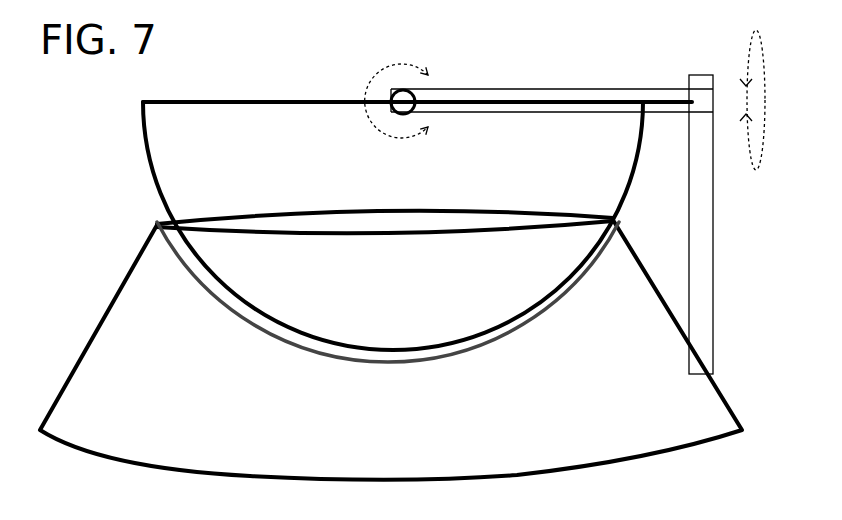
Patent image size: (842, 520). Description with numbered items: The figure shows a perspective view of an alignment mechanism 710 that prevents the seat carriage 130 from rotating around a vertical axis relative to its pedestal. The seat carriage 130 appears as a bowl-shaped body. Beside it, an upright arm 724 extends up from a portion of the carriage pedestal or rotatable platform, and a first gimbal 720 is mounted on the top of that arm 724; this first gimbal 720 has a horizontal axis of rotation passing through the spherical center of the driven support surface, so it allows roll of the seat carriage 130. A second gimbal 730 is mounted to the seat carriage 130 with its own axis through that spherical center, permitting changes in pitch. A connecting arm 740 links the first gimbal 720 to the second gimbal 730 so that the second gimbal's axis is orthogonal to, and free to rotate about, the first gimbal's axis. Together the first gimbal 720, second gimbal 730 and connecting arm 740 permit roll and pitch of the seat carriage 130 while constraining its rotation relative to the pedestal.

The seat carriage 130 is at (143, 101).
The alignment mechanism 710 is at (667, 60).
The first gimbal 720 is at (703, 114).
The arm 724 is at (713, 273).
The second gimbal 730 is at (399, 115).
The connecting arm 740 is at (542, 88).